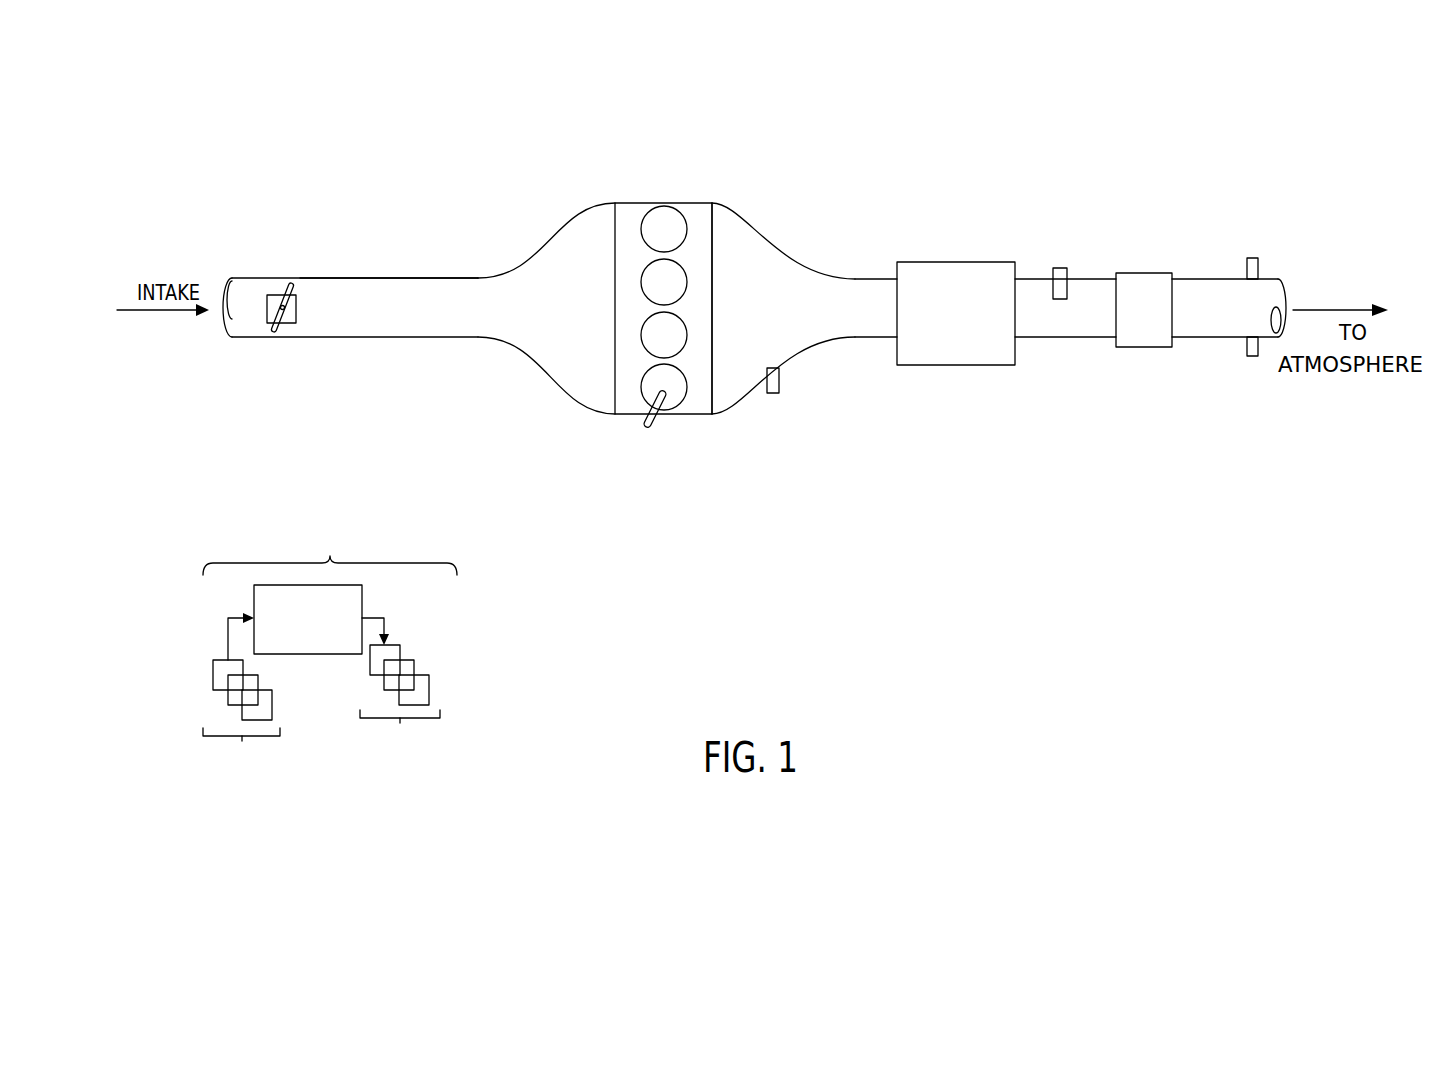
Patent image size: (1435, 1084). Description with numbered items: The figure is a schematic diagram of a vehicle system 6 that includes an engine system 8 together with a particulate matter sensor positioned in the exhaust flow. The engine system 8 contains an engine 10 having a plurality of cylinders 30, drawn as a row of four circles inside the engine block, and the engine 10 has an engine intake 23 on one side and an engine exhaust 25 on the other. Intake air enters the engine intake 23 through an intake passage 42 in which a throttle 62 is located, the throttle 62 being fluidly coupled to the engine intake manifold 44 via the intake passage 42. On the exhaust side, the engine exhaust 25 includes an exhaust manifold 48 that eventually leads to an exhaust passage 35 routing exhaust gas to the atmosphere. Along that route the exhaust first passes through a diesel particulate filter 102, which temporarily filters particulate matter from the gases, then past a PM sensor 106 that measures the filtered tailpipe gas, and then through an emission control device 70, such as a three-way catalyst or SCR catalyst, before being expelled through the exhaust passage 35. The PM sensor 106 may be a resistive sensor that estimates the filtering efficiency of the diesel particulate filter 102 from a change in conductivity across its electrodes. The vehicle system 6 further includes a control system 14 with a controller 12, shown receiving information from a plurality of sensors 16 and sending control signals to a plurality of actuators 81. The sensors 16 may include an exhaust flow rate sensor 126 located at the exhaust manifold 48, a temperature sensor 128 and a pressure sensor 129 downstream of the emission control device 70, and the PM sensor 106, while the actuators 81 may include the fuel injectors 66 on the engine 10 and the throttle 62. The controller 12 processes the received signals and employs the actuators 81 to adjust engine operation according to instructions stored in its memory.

The vehicle system 6 is at (170, 137).
The engine system 8 is at (706, 174).
The engine 10 is at (713, 288).
The controller 12 is at (320, 644).
The control system 14 is at (330, 540).
The sensors 16 is at (241, 699).
The engine intake 23 is at (409, 268).
The engine exhaust 25 is at (818, 251).
The cylinders 30 is at (686, 222).
The exhaust passage 35 is at (1212, 278).
The intake passage 42 is at (329, 338).
The engine intake manifold 44 is at (580, 324).
The exhaust manifold 48 is at (794, 324).
The throttle 62 is at (296, 306).
The fuel injectors 66 is at (657, 418).
The emission control device 70 is at (1157, 324).
The actuators 81 is at (399, 694).
The diesel particulate filter 102 is at (1000, 356).
The PM sensor 106 is at (1053, 277).
The exhaust flow rate sensor 126 is at (779, 375).
The temperature sensor 128 is at (1248, 348).
The pressure sensor 129 is at (1247, 267).